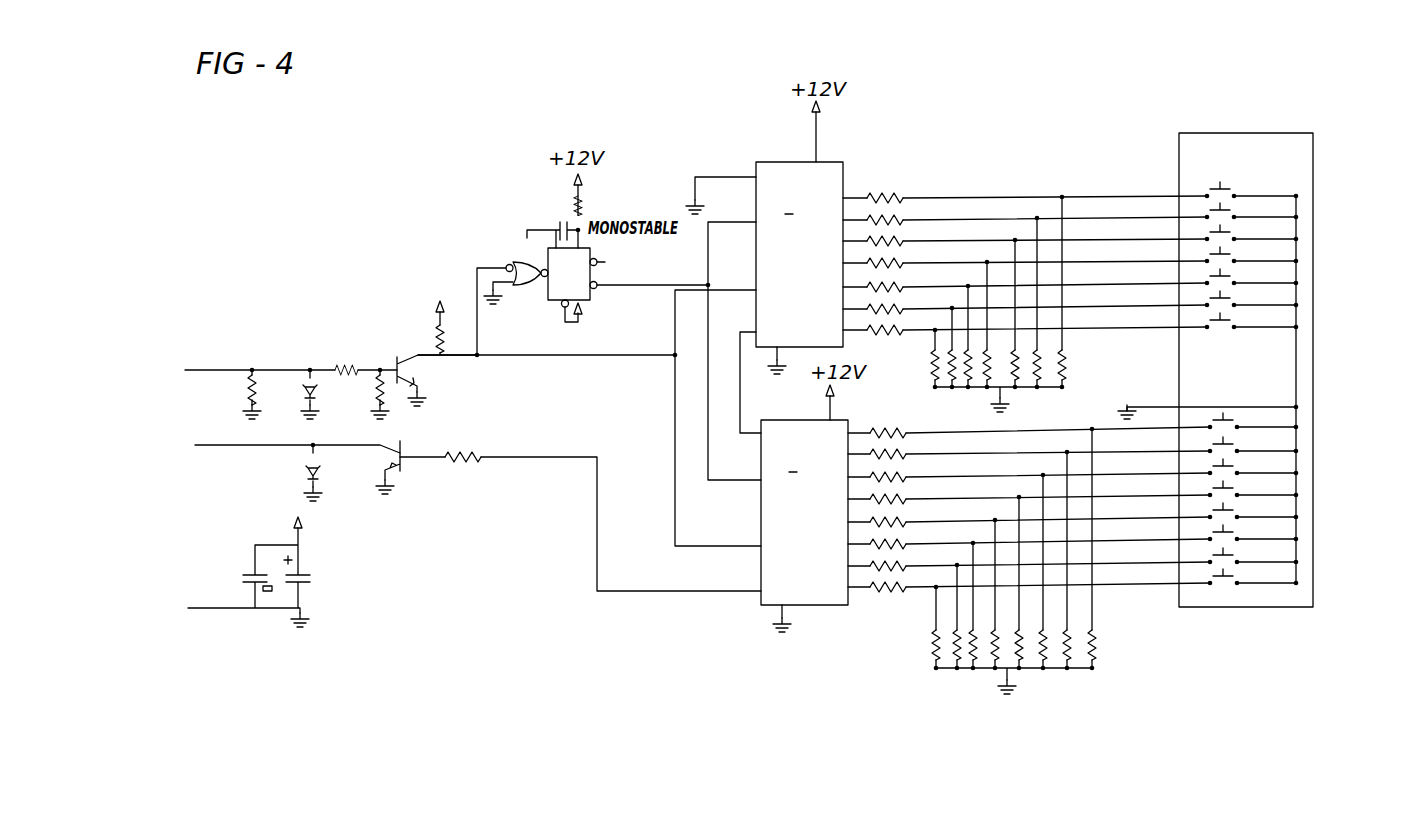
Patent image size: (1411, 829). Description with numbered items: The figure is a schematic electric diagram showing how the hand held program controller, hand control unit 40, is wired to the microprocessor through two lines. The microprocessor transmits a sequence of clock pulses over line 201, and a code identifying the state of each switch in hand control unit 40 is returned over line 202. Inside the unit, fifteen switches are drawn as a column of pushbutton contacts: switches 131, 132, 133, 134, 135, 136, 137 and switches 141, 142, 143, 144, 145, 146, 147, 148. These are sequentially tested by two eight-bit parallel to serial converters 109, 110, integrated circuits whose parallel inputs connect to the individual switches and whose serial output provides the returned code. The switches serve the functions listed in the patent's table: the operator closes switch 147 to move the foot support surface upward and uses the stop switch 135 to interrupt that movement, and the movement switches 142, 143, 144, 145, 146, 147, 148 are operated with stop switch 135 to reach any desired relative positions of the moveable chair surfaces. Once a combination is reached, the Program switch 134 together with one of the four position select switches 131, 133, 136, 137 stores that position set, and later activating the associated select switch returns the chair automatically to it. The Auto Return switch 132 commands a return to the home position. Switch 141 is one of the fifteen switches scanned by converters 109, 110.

The hand control unit 40 is at (1313, 150).
The 8-bit parallel to serial converter 109 is at (779, 162).
The 8-bit parallel to serial converter 110 is at (794, 419).
The position select switch 131 is at (1230, 276).
The Auto Return switch 132 is at (1230, 298).
The position select switch 133 is at (1230, 320).
The Program switch 134 is at (1238, 421).
The stop switch 135 is at (1238, 445).
The position select switch 136 is at (1238, 467).
The position select switch 137 is at (1238, 511).
The switch 141 is at (1230, 189).
The movement switch 142 is at (1238, 556).
The movement switch 143 is at (1230, 210).
The movement switch 144 is at (1238, 577).
The movement switch 145 is at (1230, 254).
The movement switch 146 is at (1238, 533).
The movement switch 147 is at (1230, 232).
The movement switch 148 is at (1238, 489).
The line 201 is at (205, 370).
The line 202 is at (200, 446).